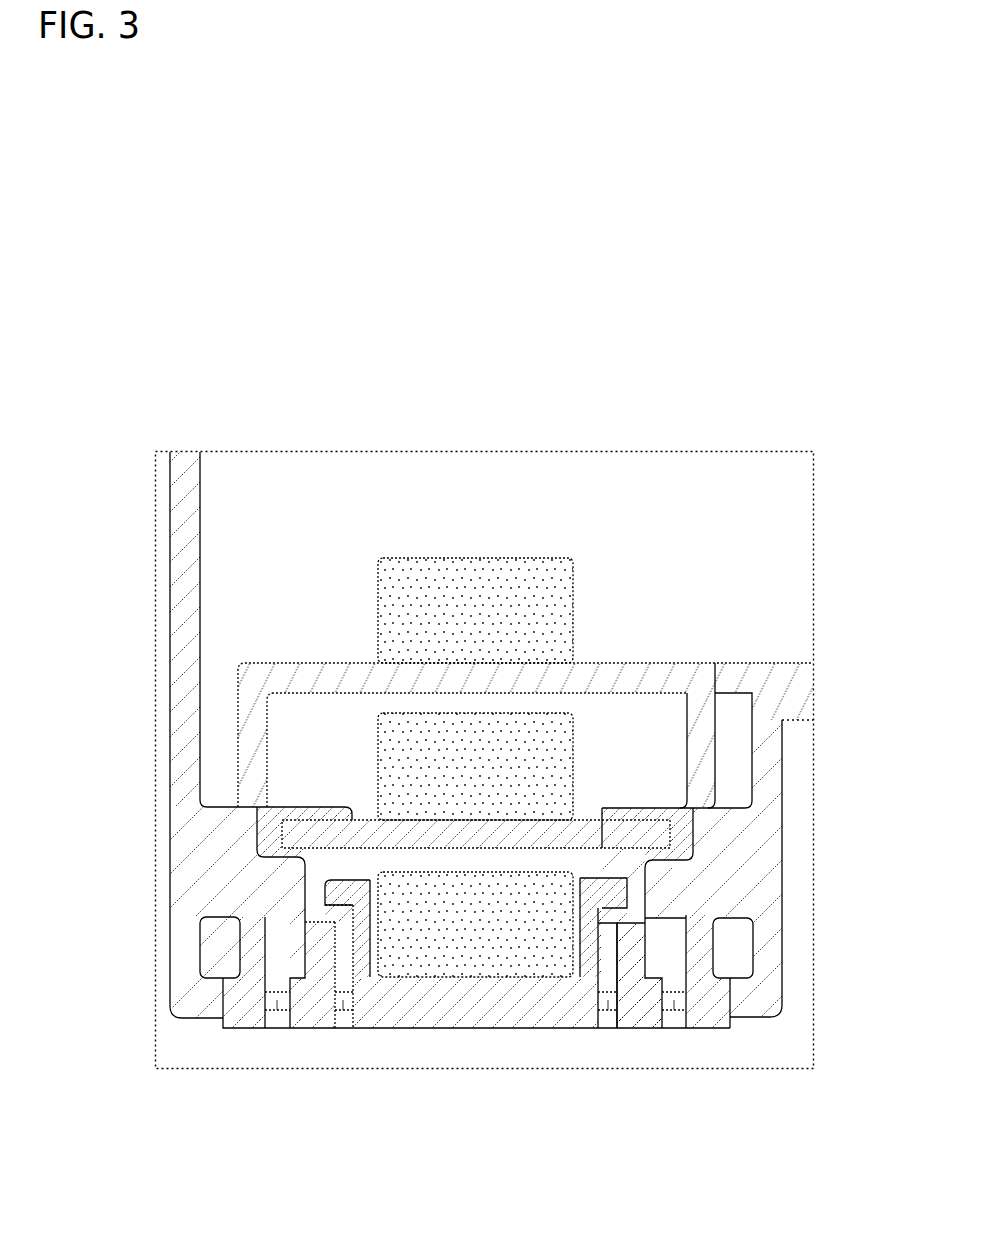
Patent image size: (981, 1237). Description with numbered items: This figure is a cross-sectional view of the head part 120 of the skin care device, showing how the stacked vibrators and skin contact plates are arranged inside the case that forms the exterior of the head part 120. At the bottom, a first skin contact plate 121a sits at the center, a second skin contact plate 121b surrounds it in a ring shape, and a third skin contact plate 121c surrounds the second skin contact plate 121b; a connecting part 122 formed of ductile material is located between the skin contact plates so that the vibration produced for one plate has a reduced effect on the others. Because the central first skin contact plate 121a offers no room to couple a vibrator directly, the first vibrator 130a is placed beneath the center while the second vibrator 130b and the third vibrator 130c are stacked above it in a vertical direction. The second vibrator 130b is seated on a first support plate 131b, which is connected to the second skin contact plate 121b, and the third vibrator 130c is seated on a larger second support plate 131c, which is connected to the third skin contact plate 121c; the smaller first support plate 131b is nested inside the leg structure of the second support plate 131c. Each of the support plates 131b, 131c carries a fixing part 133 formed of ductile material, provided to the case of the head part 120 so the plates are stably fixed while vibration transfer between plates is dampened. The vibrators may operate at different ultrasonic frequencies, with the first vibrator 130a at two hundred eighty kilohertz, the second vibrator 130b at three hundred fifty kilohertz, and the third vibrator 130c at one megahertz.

The head part 120 is at (760, 898).
The first skin contact plate 121a is at (565, 1003).
The second skin contact plate 121b is at (642, 1003).
The third skin contact plate 121c is at (712, 1000).
The connecting part 122 is at (343, 1003).
The first vibrator 130a is at (478, 940).
The second vibrator 130b is at (522, 757).
The third vibrator 130c is at (523, 598).
The first support plate 131b is at (637, 835).
The second support plate 131c is at (635, 677).
The fixing part 133 is at (683, 850).